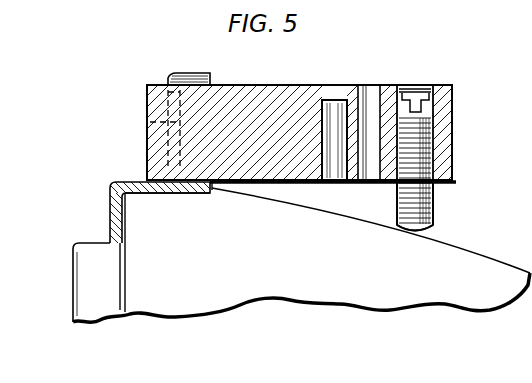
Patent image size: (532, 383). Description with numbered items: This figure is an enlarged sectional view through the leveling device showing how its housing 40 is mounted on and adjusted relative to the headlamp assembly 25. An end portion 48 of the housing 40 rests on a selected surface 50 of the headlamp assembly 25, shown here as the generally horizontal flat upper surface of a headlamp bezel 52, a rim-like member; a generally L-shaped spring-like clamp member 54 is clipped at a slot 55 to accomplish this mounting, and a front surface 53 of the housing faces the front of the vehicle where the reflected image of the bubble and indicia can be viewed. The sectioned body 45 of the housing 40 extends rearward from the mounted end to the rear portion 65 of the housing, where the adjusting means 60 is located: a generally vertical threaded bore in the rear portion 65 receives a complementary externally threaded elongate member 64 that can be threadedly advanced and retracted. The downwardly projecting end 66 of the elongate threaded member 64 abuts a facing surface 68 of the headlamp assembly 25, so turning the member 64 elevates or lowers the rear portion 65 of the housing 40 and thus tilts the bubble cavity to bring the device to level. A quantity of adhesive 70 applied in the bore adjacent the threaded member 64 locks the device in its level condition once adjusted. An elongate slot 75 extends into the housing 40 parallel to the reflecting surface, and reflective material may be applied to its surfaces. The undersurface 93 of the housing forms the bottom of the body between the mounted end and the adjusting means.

The headlamp assembly 25 is at (174, 285).
The housing 40 is at (289, 190).
The block 45 is at (276, 85).
The end portion of the housing 48 is at (147, 143).
The selected surface 50 is at (160, 186).
The headlamp bezel 52 is at (110, 225).
The perpendicular surface 53 is at (147, 160).
The clamp member 54 is at (190, 73).
The slot 55 is at (150, 122).
The adjusting means 60 is at (373, 104).
The externally threaded elongate member 64 is at (436, 201).
The rear portion of the housing 65 is at (453, 118).
The projecting end of elongate threaded member 66 is at (418, 233).
The facing surface 68 is at (470, 247).
The adhesive 70 is at (428, 86).
The elongate slot 75 is at (333, 100).
The undersurface of the housing 93 is at (308, 186).